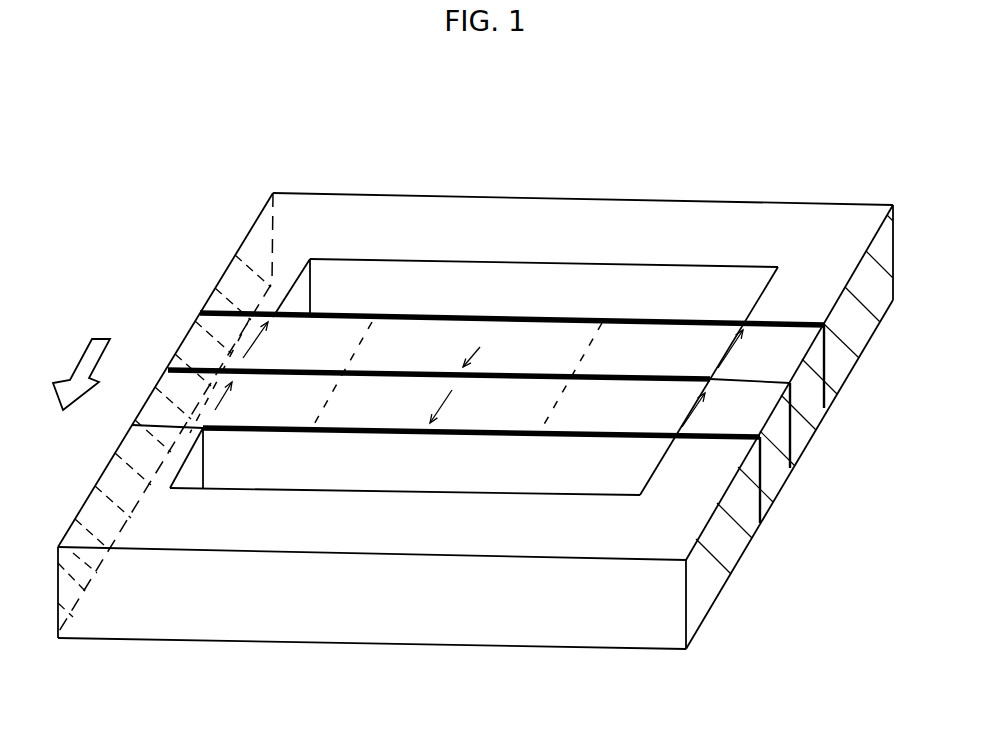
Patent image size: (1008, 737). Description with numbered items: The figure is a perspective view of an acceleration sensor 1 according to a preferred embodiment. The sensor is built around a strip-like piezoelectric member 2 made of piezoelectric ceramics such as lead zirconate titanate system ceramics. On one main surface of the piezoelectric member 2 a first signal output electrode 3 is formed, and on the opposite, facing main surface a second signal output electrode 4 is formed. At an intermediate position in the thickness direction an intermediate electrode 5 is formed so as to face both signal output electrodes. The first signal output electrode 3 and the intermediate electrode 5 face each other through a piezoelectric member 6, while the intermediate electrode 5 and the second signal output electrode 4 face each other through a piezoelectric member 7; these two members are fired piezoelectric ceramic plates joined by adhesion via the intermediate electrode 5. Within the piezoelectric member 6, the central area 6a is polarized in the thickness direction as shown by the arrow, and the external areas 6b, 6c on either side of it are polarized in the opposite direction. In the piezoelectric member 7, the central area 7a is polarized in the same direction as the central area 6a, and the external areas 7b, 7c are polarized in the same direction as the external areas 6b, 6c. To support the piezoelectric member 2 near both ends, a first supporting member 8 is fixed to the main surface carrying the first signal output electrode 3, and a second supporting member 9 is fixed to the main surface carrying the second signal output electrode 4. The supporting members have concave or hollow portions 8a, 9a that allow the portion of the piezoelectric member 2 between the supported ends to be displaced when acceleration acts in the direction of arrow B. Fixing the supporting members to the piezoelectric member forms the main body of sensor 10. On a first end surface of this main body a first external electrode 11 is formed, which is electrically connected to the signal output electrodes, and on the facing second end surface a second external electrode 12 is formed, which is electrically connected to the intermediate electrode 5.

The acceleration sensor 1 is at (188, 186).
The piezoelectric member 2 is at (770, 426).
The first signal output electrode 3 is at (572, 320).
The second signal output electrode 4 is at (497, 442).
The intermediate electrode 5 is at (658, 378).
The piezoelectric member 6 is at (417, 337).
The central area 6a is at (437, 338).
The external area 6b is at (333, 335).
The external area 6c is at (626, 343).
The piezoelectric member 7 is at (380, 407).
The central area 7a is at (458, 433).
The external area 7b is at (278, 405).
The external area 7c is at (628, 417).
The first supporting member 8 is at (823, 292).
The concave portion 8a is at (540, 280).
The second supporting member 9 is at (697, 507).
The concave portion 9a is at (535, 483).
The main body of sensor 10 is at (887, 572).
The first external electrode 11 is at (867, 322).
The second external electrode 12 is at (107, 472).
The arrow B is at (80, 352).